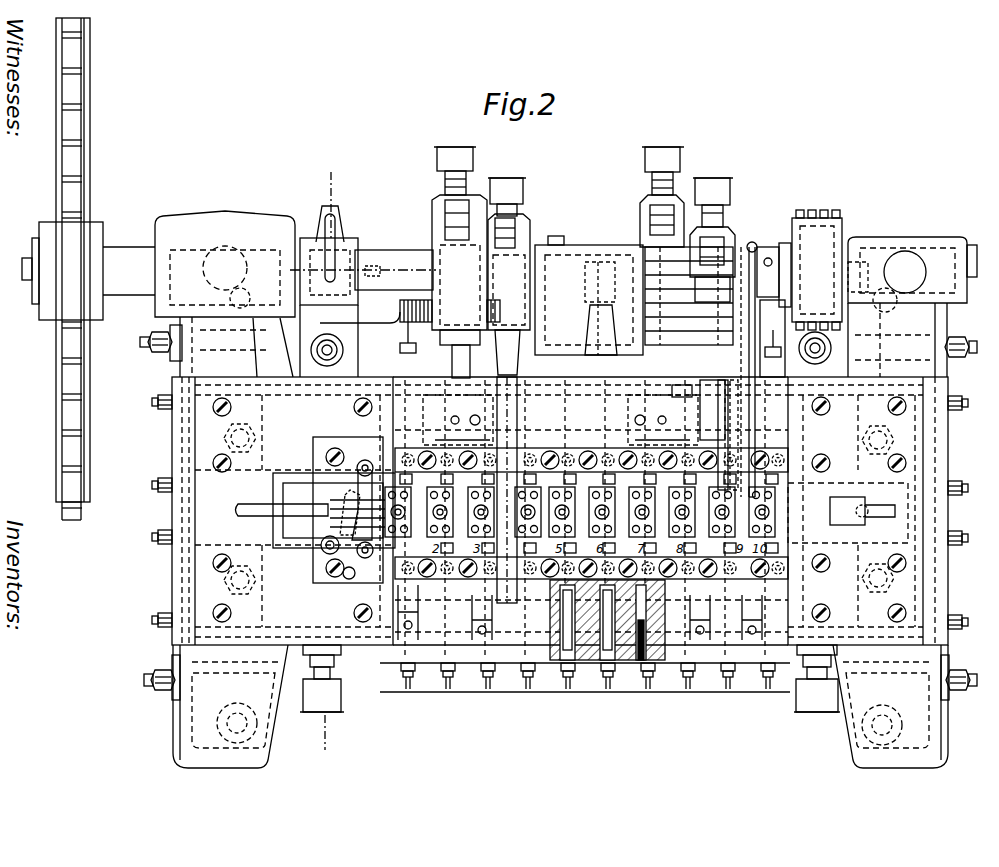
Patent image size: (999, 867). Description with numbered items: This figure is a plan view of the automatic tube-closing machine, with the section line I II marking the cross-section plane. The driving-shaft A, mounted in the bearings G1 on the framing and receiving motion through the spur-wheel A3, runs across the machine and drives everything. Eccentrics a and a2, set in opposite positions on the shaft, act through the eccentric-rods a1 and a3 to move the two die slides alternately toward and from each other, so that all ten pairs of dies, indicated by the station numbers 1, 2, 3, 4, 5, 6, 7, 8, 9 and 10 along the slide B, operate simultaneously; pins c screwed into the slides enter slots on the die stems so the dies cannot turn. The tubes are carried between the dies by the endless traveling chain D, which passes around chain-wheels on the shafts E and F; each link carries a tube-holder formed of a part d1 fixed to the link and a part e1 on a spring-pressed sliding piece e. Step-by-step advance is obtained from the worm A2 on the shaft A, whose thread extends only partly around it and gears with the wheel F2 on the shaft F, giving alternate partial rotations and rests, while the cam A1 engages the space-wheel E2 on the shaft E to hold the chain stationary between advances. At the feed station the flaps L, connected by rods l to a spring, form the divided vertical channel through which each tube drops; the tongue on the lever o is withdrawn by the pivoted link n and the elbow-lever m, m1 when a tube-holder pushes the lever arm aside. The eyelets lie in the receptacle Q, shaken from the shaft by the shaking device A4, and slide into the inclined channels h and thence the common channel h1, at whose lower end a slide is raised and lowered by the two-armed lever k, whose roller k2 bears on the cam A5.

The driving-shaft A is at (110, 256).
The cam A1 is at (332, 226).
The worm A2 is at (836, 235).
The spur-wheel A3 is at (75, 172).
The shaking device A4 is at (550, 240).
The cam A5 is at (753, 272).
The slide B is at (590, 516).
The pins c is at (452, 460).
The endless traveling chain D is at (580, 512).
The tube-holder part d1 is at (681, 527).
The shaft E is at (272, 511).
The space-wheel E2 is at (366, 268).
The sliding piece e is at (474, 512).
The tube-holder part e1 is at (525, 512).
The shaft F is at (878, 511).
The wheel F2 is at (862, 272).
The bearings G1 is at (228, 228).
The inclined channels h is at (669, 268).
The common channel h1 is at (748, 408).
The section line I is at (324, 194).
The section line II is at (570, 710).
The two-armed lever k is at (772, 338).
The roller k2 is at (774, 264).
The flaps L is at (348, 511).
The rods l is at (326, 524).
The elbow-lever m is at (345, 498).
The elbow-lever m1 is at (326, 550).
The pivoted link n is at (328, 572).
The lever o is at (345, 578).
The receptacle Q is at (589, 300).
The eccentrics a is at (437, 274).
The eccentric-rods a1 is at (452, 352).
The eccentrics a2 is at (623, 276).
The eccentric-rods a3 is at (515, 437).
The position 1 is at (403, 482).
The position 2 is at (442, 482).
The position 3 is at (483, 482).
The position 4 is at (536, 482).
The position 5 is at (575, 482).
The position 6 is at (614, 482).
The position 7 is at (655, 482).
The position 8 is at (695, 482).
The position 9 is at (735, 482).
The position 10 is at (765, 482).